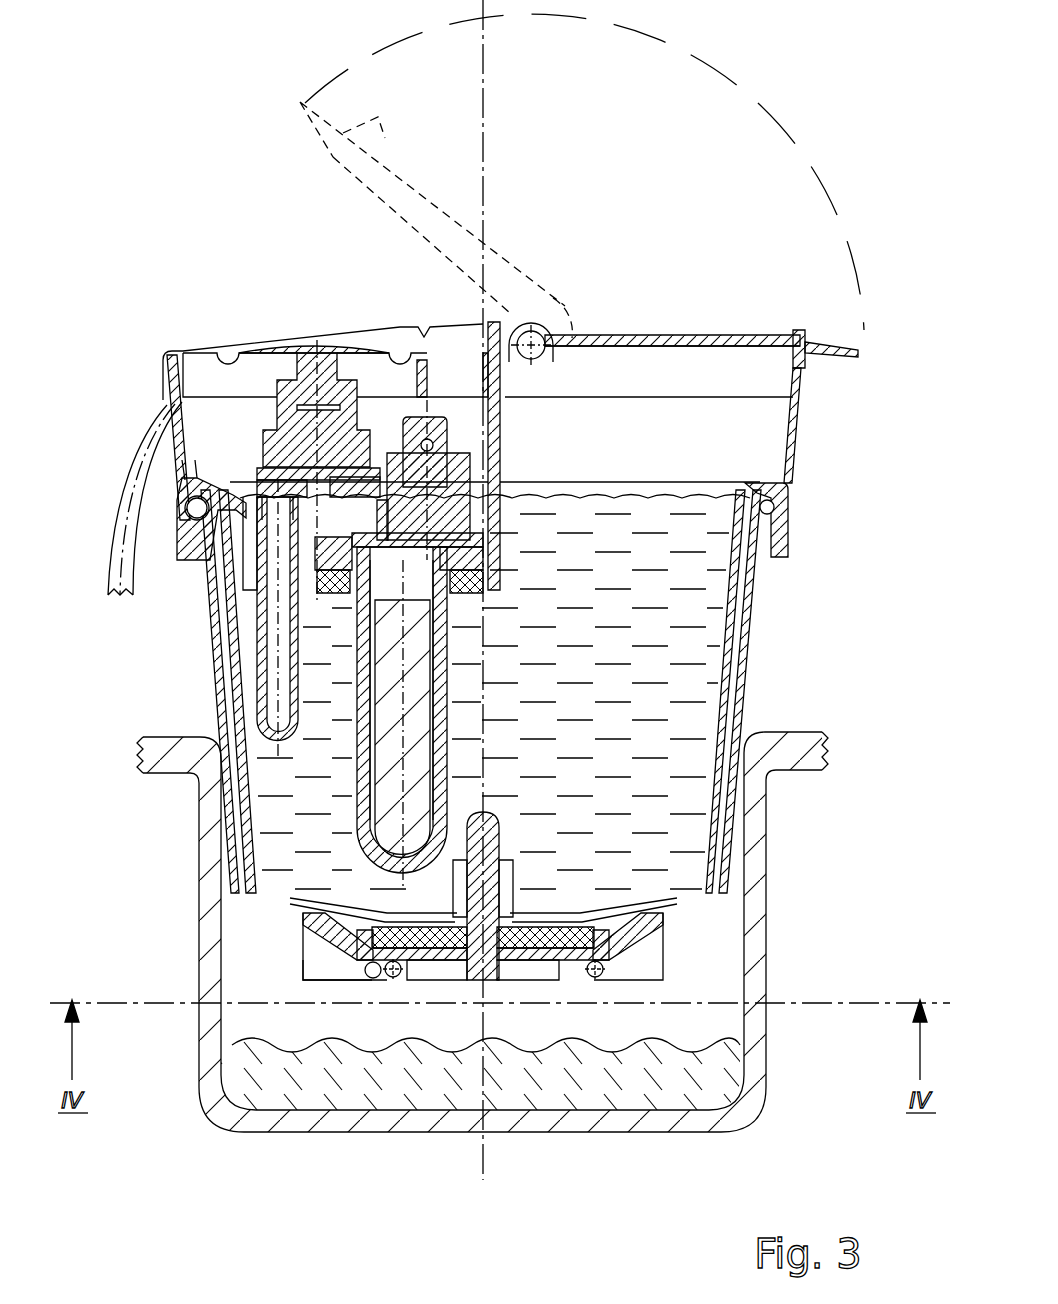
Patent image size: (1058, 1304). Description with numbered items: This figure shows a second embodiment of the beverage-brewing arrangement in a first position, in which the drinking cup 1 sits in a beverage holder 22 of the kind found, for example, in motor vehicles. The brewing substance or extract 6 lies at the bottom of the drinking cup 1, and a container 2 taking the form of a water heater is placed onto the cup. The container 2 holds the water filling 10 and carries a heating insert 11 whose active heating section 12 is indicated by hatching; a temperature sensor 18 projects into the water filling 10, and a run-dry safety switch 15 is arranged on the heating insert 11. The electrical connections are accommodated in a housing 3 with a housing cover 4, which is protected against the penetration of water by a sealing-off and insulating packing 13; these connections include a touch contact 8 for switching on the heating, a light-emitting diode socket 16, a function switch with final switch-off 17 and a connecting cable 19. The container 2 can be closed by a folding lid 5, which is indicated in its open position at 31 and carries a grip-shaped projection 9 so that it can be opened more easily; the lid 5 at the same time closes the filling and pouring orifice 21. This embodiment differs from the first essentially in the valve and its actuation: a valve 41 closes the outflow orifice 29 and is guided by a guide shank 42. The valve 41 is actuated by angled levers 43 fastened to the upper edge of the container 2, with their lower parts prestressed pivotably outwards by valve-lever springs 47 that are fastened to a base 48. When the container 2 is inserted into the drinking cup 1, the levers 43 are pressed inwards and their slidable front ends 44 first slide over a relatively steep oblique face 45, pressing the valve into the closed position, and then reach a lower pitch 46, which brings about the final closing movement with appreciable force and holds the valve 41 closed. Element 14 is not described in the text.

The drinking cup 1 is at (418, 636).
The container 2 is at (753, 590).
The housing 3 is at (340, 595).
The housing cover 4 is at (270, 428).
The folding lid 5 is at (805, 332).
The brewing substance or extract 6 is at (690, 1033).
The touch contact 8 is at (305, 345).
The grip-shaped projection 9 is at (840, 343).
The water filling 10 is at (625, 498).
The heating insert 11 is at (360, 780).
The active heating section 12 is at (446, 655).
The sealing-off and insulating packing 13 is at (280, 640).
The bracket 14 is at (322, 523).
The run-dry safety switch 15 is at (470, 492).
The light-emitting diode socket 16 is at (437, 337).
The function switch with final switch-off 17 is at (273, 428).
The temperature sensor 18 is at (262, 728).
The connecting cable 19 is at (132, 477).
The filling and pouring orifice 21 is at (765, 333).
The beverage holder 22 is at (318, 965).
The outflow orifice 29 is at (578, 962).
The folding lid in open position 31 is at (358, 128).
The valve 41 is at (398, 972).
The guide shank 42 is at (513, 890).
The angled levers 43 is at (313, 982).
The slidable front ends 44 is at (372, 972).
The oblique face 45 is at (600, 945).
The lower pitch 46 is at (607, 973).
The valve-lever springs 47 is at (258, 830).
The base 48 is at (207, 537).